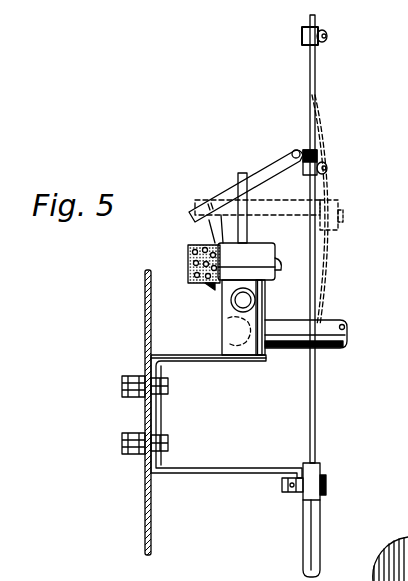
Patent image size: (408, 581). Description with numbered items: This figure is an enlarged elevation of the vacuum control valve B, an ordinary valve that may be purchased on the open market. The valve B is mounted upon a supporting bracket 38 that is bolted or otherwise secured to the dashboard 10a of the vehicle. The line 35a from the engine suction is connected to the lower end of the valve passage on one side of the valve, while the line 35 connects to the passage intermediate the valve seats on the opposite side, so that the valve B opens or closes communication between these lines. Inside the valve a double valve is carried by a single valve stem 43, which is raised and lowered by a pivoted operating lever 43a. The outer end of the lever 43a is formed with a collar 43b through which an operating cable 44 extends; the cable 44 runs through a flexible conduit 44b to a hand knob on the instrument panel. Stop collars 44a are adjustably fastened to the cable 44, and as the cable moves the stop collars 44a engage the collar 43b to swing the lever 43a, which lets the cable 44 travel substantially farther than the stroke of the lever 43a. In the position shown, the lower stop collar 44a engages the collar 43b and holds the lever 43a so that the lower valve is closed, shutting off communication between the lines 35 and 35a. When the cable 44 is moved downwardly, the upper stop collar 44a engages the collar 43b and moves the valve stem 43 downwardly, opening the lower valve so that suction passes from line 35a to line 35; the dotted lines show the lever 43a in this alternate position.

The dashboard 10a is at (147, 341).
The supporting bracket 38 is at (196, 366).
The vacuum control valve B is at (222, 322).
The line 35 is at (258, 302).
The line from the engine suction 35a is at (333, 322).
The operating cable 44 is at (317, 86).
The stop collars 44a is at (320, 31).
The flexible conduit 44b is at (322, 508).
The collar 43b is at (318, 154).
The operating lever 43a is at (279, 193).
The valve stem 43 is at (250, 232).